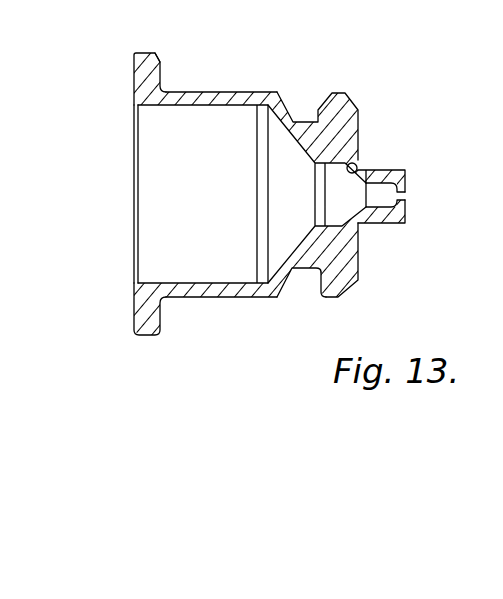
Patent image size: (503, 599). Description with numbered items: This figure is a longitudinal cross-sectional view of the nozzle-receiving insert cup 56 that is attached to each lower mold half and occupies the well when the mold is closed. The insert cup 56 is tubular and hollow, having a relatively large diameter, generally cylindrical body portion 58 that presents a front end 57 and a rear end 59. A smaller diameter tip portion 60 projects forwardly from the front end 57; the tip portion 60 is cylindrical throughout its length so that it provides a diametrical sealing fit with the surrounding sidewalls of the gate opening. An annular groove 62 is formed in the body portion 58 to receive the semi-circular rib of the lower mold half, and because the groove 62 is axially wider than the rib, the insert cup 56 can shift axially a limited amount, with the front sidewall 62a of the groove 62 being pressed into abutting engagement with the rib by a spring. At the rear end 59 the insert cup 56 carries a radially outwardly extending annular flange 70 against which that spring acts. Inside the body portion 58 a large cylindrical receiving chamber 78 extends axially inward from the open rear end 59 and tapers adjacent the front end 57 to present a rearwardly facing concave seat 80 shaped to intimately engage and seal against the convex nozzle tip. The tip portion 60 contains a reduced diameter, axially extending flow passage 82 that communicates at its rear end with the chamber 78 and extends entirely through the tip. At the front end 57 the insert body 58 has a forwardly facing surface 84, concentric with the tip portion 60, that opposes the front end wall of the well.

The nozzle-receiving insert cup 56 is at (268, 89).
The front end 57 is at (359, 110).
The body portion 58 is at (201, 92).
The rear end 59 is at (134, 76).
The tip portion 60 is at (404, 170).
The annular groove 62 is at (304, 272).
The front sidewall of groove 62a is at (319, 298).
The annular flange 70 is at (154, 62).
The receiving chamber 78 is at (155, 252).
The concave seat 80 is at (354, 167).
The flow passage 82 is at (388, 196).
The forwardly facing surface 84 is at (359, 243).